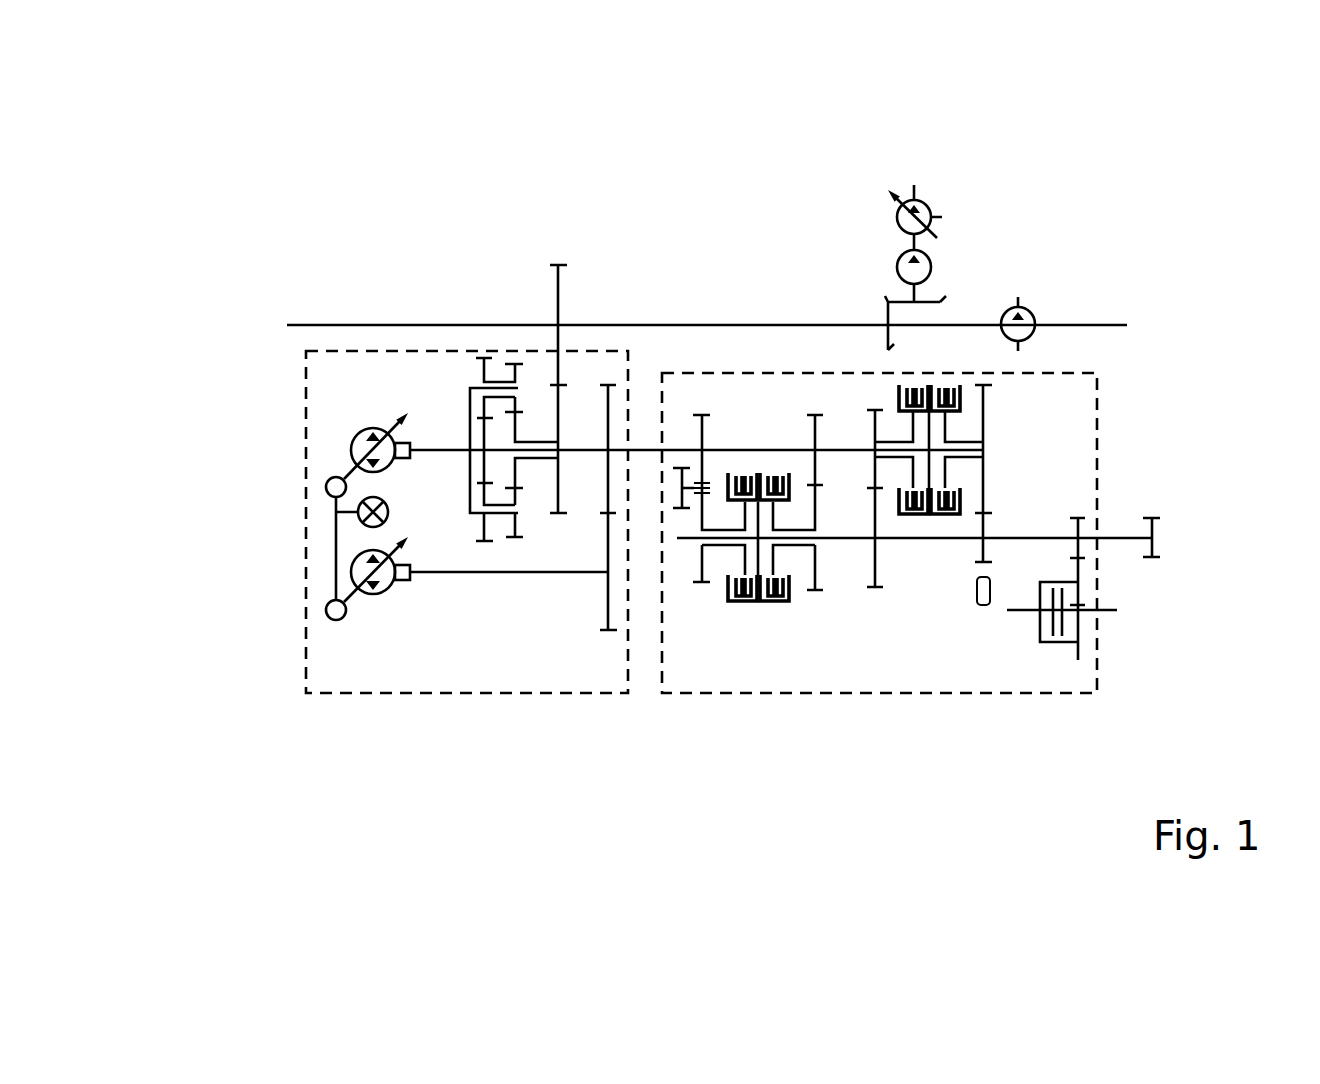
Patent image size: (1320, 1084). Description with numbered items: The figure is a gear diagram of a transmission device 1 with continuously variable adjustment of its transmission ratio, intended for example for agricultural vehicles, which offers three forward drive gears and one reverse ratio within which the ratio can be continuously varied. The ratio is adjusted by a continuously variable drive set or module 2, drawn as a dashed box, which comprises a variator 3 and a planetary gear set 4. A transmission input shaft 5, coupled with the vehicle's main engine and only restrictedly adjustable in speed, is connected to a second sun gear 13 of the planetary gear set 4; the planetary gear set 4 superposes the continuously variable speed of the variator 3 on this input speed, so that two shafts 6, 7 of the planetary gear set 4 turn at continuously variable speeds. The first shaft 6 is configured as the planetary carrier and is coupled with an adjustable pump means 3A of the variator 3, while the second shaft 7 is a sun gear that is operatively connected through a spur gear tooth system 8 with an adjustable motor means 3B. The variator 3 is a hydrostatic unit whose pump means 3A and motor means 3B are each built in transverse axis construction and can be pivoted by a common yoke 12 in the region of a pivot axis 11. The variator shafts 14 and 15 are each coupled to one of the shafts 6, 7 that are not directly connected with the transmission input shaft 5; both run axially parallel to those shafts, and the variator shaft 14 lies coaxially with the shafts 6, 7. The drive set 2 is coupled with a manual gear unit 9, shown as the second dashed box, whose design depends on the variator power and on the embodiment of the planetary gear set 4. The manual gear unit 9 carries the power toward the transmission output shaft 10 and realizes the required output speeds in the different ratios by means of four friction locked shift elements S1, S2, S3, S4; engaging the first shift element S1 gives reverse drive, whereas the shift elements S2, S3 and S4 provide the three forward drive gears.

The transmission device 1 is at (366, 281).
The continuously variable drive set 2 is at (441, 707).
The variator 3 is at (321, 540).
The pump means 3A is at (350, 448).
The motor means 3B is at (352, 576).
The planetary gear set 4 is at (526, 341).
The transmission input shaft 5 is at (503, 327).
The shaft, planet carrier 6 is at (471, 387).
The shaft, sun gear 7 is at (504, 452).
The spur gear tooth system 8 is at (617, 541).
The manual gear unit 9 is at (877, 708).
The transmission output shaft 10 is at (1115, 538).
The pivot axis 11 is at (357, 512).
The yoke 12 is at (336, 565).
The second sun gear 13 is at (560, 412).
The variator shaft 14 is at (437, 450).
The variator shaft 15 is at (555, 572).
The shift element S1 is at (740, 455).
The shift element S2 is at (773, 455).
The shift element S3 is at (885, 386).
The shift element S4 is at (950, 365).